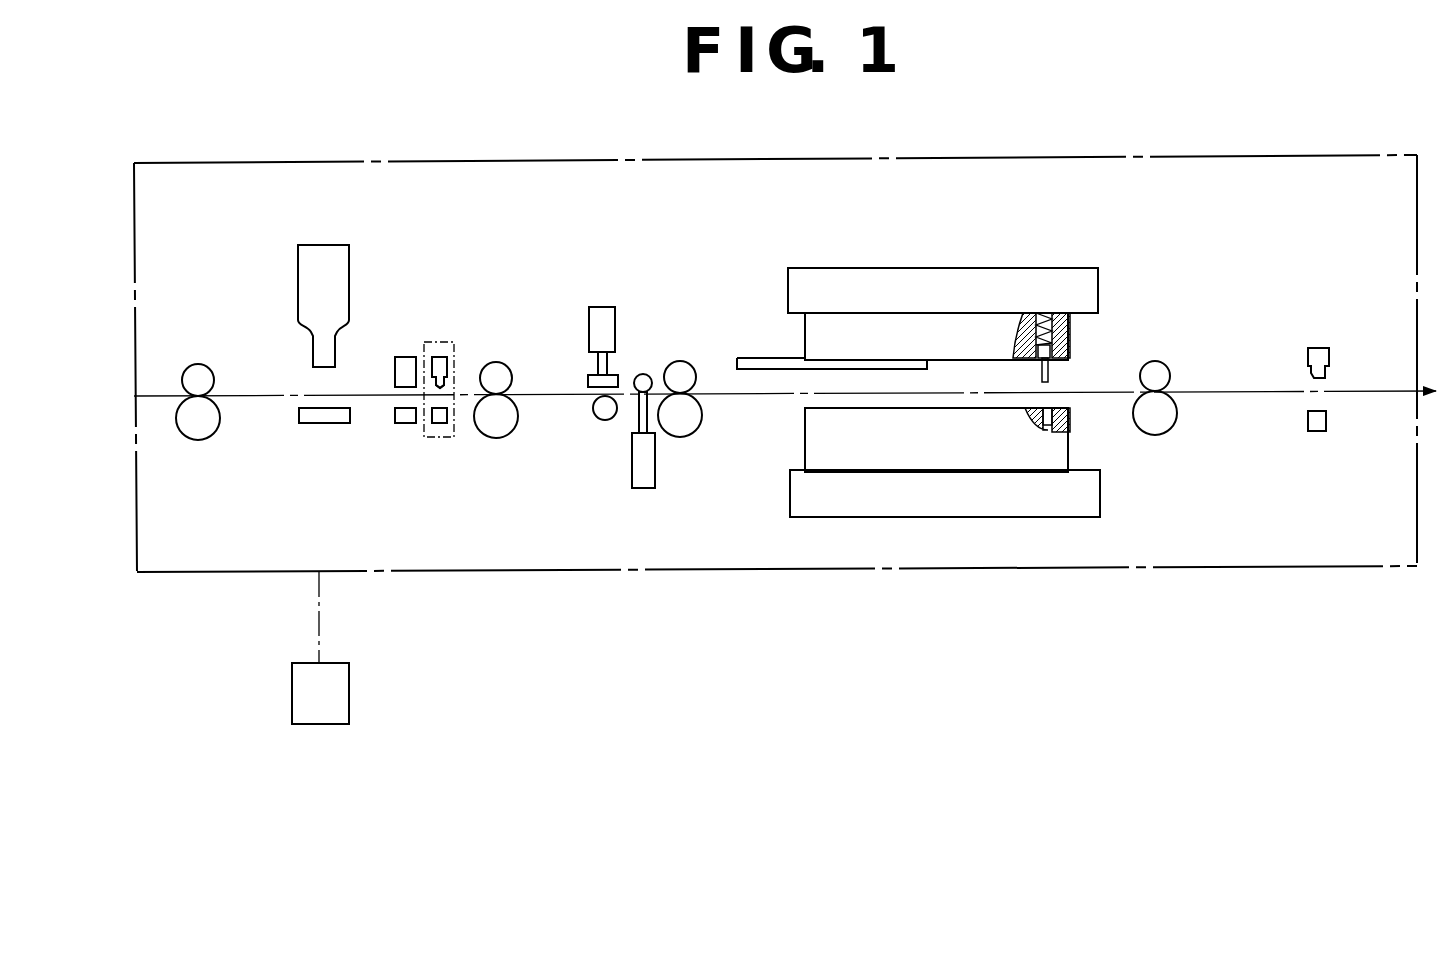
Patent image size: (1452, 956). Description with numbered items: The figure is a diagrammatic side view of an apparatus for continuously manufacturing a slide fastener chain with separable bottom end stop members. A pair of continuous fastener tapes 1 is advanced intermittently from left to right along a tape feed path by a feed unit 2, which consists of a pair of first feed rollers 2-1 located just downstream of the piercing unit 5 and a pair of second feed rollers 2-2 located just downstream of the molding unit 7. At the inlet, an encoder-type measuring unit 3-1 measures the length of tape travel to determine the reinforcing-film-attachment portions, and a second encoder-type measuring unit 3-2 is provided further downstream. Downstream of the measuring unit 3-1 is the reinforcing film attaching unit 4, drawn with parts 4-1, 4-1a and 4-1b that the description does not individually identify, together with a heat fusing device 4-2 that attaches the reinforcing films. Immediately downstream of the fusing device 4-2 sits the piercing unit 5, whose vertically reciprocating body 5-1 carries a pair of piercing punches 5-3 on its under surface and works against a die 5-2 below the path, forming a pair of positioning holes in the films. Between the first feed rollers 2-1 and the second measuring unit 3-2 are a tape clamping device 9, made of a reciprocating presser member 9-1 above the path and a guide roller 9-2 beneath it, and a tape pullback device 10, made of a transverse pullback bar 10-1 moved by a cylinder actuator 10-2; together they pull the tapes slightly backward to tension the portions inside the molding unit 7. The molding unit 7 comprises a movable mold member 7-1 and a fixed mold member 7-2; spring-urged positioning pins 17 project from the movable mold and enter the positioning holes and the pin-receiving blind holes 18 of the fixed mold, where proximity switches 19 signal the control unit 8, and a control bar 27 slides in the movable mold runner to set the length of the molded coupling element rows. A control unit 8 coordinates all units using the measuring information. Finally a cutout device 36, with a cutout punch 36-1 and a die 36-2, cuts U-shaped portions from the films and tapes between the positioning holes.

The fastener tapes 1 is at (244, 392).
The feed unit 2 is at (520, 370).
The first feed rollers 2-1 is at (492, 430).
The second feed rollers 2-2 is at (1156, 424).
The measuring unit 3-1 is at (197, 430).
The second measuring unit 3-2 is at (683, 438).
The reinforcing film attaching unit 4 is at (330, 441).
The hopper 4-1 is at (292, 264).
The hopper body 4-1a is at (323, 257).
The support plate 4-1b is at (307, 424).
The fusing device 4-2 is at (402, 352).
The piercing unit 5 is at (433, 338).
The piercing unit body 5-1 is at (440, 358).
The die 5-2 is at (440, 424).
The piercing punches 5-3 is at (450, 378).
The molding unit 7 is at (959, 376).
The movable mold member 7-1 is at (900, 278).
The fixed mold member 7-2 is at (947, 503).
The control unit 8 is at (308, 709).
The tape clamping device 9 is at (587, 367).
The presser member 9-1 is at (610, 380).
The guide roller 9-2 is at (598, 407).
The tape pullback device 10 is at (600, 470).
The pullback bar 10-1 is at (638, 413).
The cylinder actuator 10-2 is at (643, 482).
The positioning pins 17 is at (1050, 372).
The pin-receiving blind holes 18 is at (1020, 404).
The proximity switches 19 is at (1052, 432).
The control bar 27 is at (753, 358).
The cutout device 36 is at (1313, 385).
The cutout punch 36-1 is at (1332, 355).
The die 36-2 is at (1326, 418).